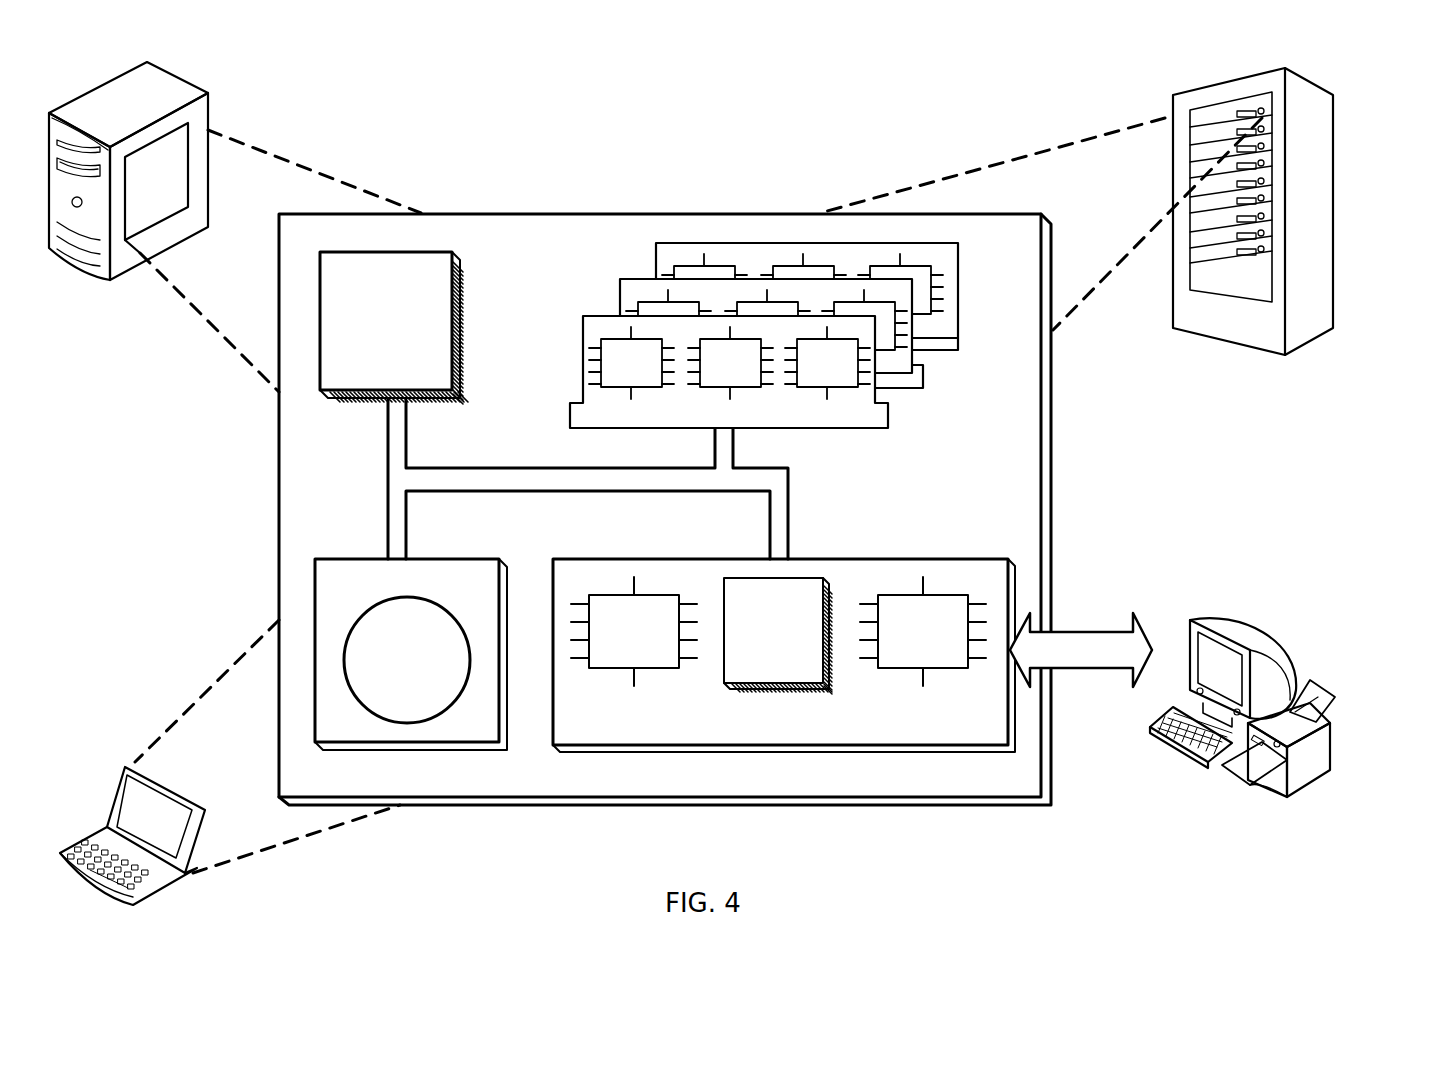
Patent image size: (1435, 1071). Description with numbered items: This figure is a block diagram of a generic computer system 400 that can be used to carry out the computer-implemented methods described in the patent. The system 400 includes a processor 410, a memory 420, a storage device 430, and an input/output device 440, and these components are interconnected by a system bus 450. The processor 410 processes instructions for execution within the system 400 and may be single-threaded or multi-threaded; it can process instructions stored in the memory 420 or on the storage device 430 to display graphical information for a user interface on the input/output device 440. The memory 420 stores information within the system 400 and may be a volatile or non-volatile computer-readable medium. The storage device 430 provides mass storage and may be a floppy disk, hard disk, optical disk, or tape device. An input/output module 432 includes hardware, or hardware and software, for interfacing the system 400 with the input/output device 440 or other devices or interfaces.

The computer system 400 is at (478, 86).
The processor 410 is at (394, 328).
The memory 420 is at (957, 389).
The storage device 430 is at (411, 654).
The input/output module 432 is at (948, 559).
The input/output device 440 is at (1190, 620).
The system bus 450 is at (592, 489).